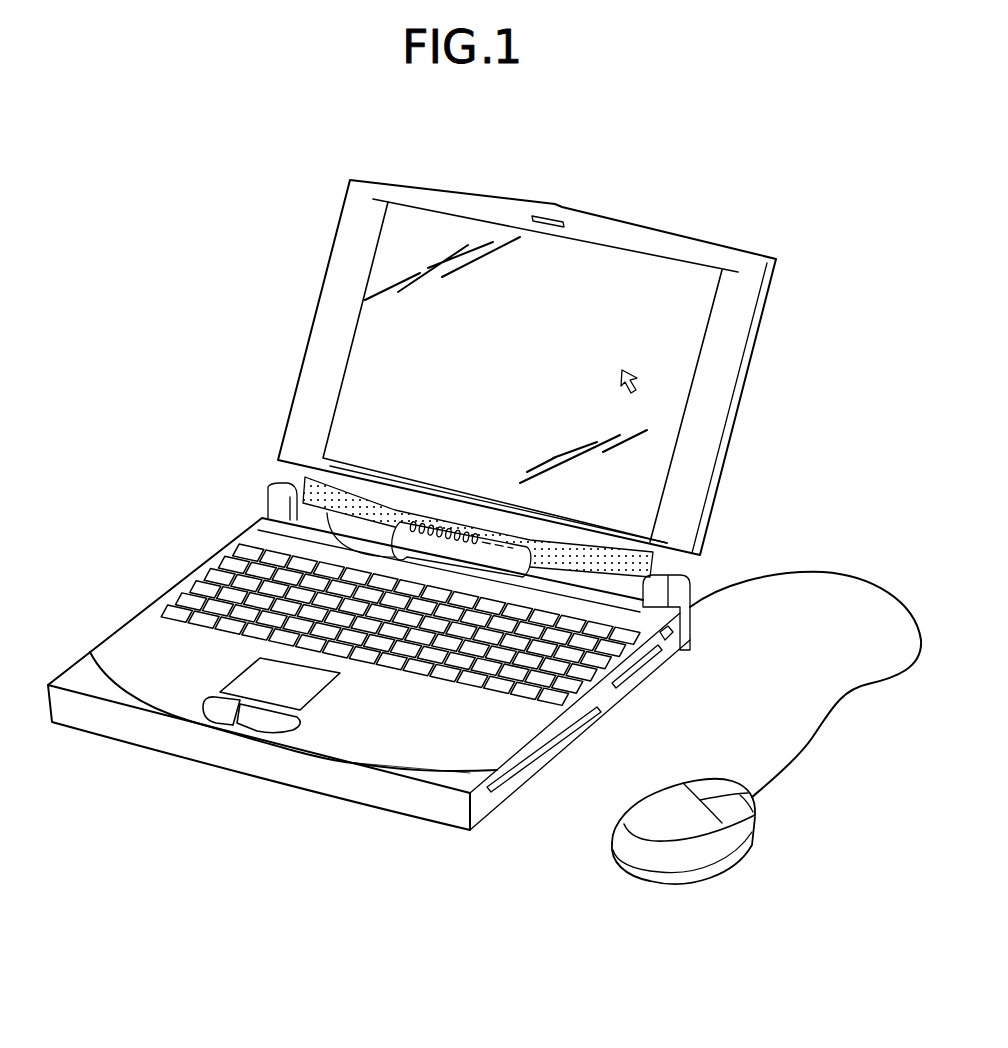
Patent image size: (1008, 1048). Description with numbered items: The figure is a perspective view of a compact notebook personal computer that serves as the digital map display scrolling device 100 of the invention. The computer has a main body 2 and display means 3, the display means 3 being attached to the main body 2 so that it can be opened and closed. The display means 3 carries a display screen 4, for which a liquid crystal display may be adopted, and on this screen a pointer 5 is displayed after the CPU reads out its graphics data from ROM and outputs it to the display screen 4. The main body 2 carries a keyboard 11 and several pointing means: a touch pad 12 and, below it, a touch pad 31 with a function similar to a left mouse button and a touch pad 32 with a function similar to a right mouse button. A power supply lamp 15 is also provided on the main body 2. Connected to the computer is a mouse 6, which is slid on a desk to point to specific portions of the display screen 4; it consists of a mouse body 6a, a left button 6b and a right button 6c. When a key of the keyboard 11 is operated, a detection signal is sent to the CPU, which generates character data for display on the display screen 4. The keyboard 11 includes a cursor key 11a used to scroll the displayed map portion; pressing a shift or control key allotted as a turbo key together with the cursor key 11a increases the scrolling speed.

The digital map display scrolling device 100 is at (792, 334).
The main body 2 is at (447, 812).
The display means 3 is at (756, 263).
The display screen 4 is at (695, 280).
The pointer 5 is at (645, 384).
The power supply lamp 15 is at (308, 493).
The keyboard 11 is at (230, 578).
The cursor key 11a is at (424, 690).
The touch pad 12 is at (247, 682).
The touch pad 31 is at (213, 712).
The touch pad 32 is at (257, 723).
The mouse 6 is at (730, 857).
The mouse body 6a is at (647, 810).
The left button 6b is at (707, 786).
The right button 6c is at (735, 805).